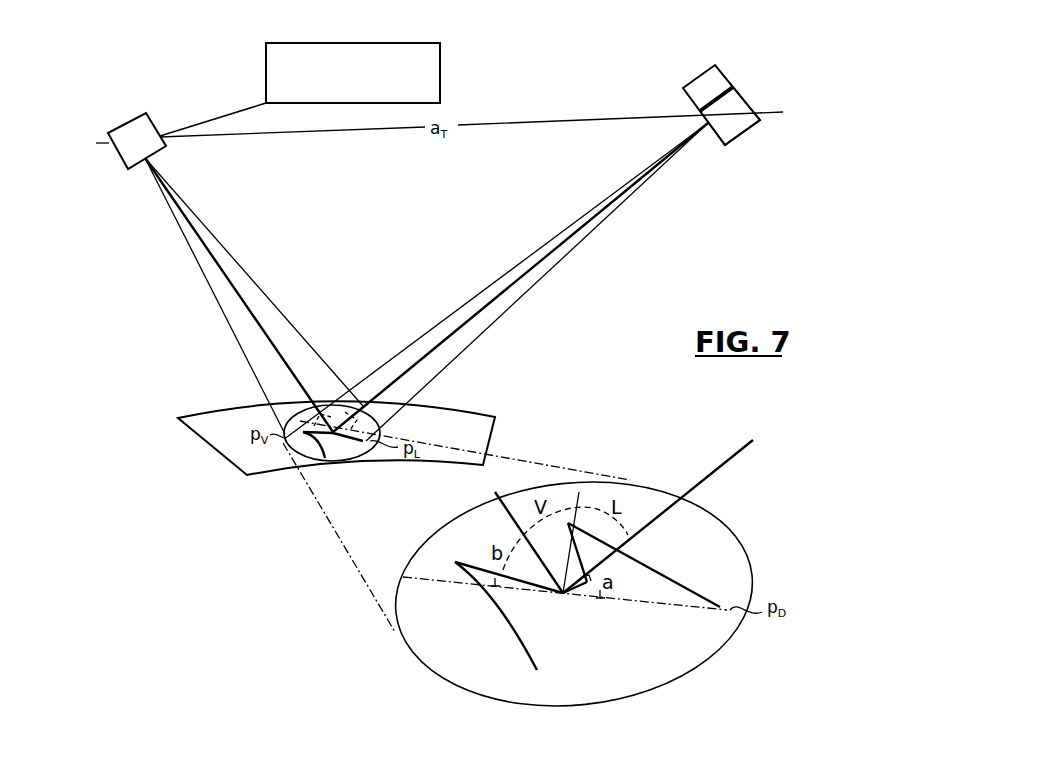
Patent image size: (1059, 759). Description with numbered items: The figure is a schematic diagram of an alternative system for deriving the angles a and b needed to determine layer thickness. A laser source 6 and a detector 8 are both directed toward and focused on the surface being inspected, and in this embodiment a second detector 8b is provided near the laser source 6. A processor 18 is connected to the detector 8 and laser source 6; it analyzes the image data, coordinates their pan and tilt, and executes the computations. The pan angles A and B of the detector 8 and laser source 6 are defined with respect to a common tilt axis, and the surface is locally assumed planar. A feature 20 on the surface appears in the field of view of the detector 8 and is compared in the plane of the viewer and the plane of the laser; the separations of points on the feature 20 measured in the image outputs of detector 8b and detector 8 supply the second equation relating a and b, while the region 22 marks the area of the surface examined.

The laser source 6 is at (700, 83).
The detector 8 is at (136, 128).
The second detector 8b is at (730, 130).
The processor 18 is at (278, 63).
The feature 20 is at (327, 459).
The inspection region 22 is at (363, 460).